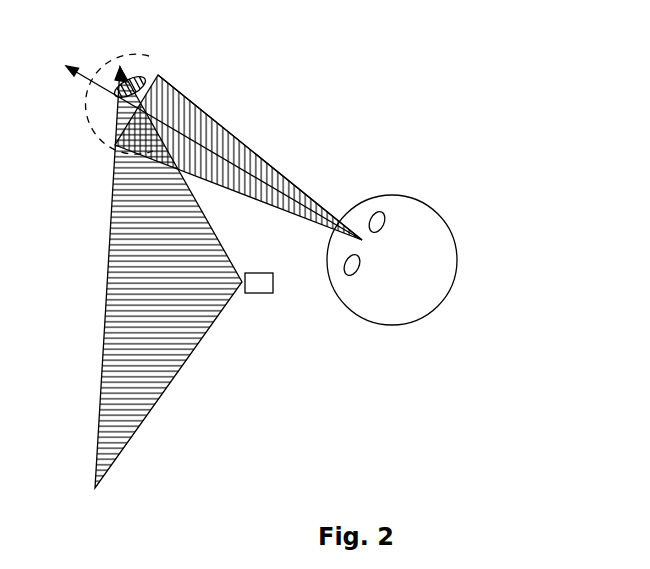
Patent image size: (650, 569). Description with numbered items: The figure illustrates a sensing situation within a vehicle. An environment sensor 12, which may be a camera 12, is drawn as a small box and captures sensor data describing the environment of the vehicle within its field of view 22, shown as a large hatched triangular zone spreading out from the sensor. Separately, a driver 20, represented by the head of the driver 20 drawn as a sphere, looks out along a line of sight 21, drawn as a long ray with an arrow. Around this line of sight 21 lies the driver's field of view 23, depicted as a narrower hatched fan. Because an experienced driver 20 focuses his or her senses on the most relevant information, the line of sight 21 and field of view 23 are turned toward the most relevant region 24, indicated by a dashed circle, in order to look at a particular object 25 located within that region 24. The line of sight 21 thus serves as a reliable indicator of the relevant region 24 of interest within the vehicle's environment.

The environment sensor 12 is at (262, 293).
The driver 20 is at (445, 240).
The line of sight 21 is at (245, 152).
The field of view 22 is at (117, 278).
The field of view 23 is at (183, 90).
The region 24 is at (92, 108).
The object 25 is at (133, 78).